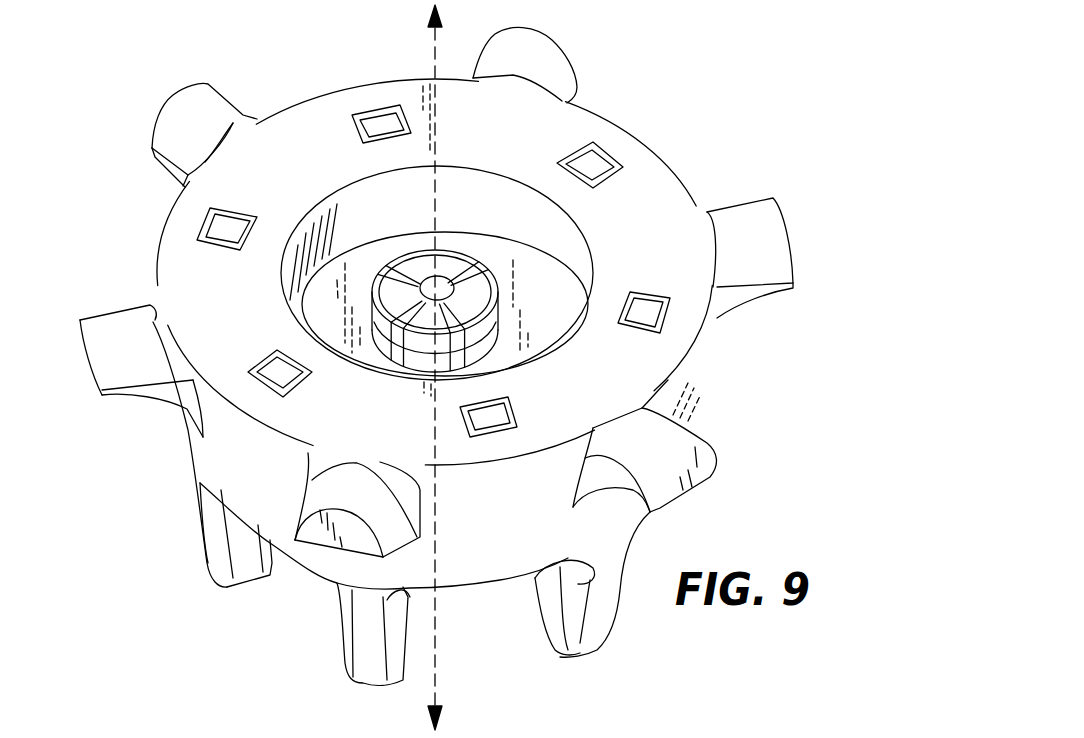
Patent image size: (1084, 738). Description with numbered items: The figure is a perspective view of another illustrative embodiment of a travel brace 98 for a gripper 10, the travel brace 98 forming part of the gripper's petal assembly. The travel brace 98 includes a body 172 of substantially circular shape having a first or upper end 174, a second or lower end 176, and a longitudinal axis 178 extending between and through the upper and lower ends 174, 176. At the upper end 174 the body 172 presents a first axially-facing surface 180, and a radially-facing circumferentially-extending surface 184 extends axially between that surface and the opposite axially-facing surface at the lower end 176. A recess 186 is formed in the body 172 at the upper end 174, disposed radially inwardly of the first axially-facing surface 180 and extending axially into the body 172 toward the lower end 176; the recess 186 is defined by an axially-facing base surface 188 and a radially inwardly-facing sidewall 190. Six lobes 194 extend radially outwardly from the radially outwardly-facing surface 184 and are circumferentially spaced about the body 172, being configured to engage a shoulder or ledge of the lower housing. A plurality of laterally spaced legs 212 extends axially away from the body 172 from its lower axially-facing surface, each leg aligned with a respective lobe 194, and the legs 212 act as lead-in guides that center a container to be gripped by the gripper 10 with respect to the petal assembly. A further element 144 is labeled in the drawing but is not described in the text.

The gripper 10 is at (189, 221).
The travel brace 98 is at (669, 108).
The side surface of traction element 144 is at (774, 255).
The body 172 is at (308, 97).
The upper end 174 is at (744, 183).
The lower end 176 is at (178, 556).
The longitudinal axis 178 is at (432, 45).
The first axially-facing surface 180 is at (530, 144).
The radially-facing circumferentially-extending surface 184 is at (223, 462).
The recess 186 is at (553, 257).
The axially-facing base surface 188 is at (338, 337).
The radially inwardly-facing sidewall 190 is at (338, 230).
The lobes 194 is at (184, 112).
The legs 212 is at (343, 647).